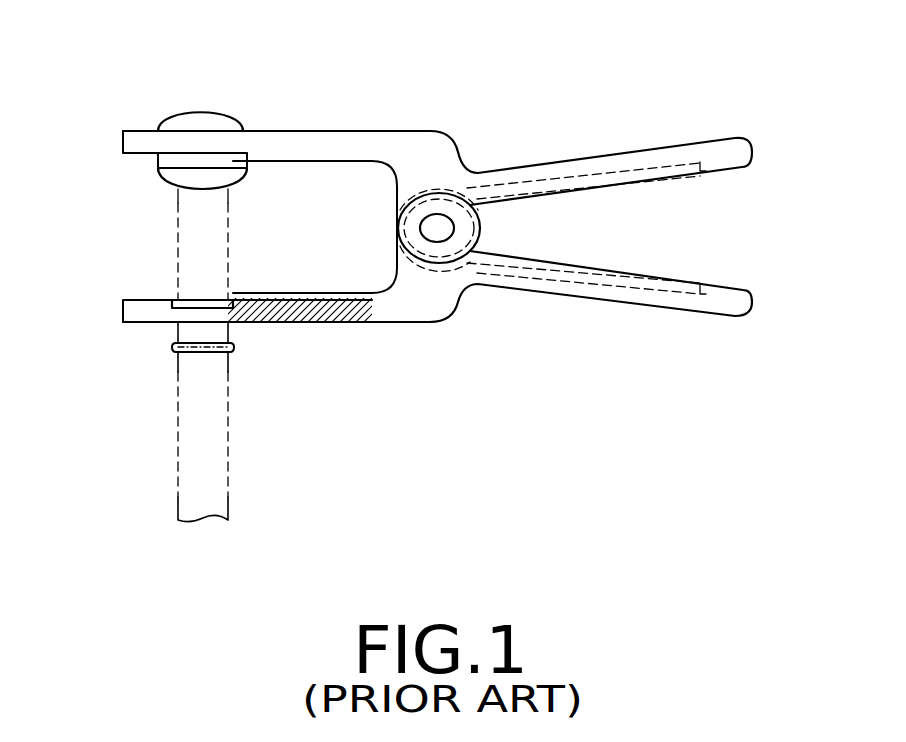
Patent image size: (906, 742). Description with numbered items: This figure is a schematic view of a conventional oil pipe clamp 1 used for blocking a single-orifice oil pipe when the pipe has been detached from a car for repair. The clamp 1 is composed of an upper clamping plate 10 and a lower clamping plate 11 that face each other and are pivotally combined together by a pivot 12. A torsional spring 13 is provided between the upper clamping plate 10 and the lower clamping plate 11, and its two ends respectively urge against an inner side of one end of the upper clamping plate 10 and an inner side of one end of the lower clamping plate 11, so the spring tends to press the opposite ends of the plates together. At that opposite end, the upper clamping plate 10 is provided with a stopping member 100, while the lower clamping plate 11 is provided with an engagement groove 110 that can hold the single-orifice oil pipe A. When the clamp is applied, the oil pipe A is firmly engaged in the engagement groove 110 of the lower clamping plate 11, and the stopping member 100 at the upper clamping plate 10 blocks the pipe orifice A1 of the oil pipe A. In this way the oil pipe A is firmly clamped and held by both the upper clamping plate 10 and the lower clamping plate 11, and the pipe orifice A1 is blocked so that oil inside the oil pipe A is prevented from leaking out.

The oil pipe clamp 1 is at (437, 213).
The upper clamping plate 10 is at (335, 142).
The lower clamping plate 11 is at (403, 312).
The pivot 12 is at (436, 228).
The torsional spring 13 is at (468, 250).
The stopping member 100 is at (154, 162).
The engagement groove 110 is at (152, 315).
The pipe orifice A1 is at (207, 188).
The oil pipe A is at (228, 443).